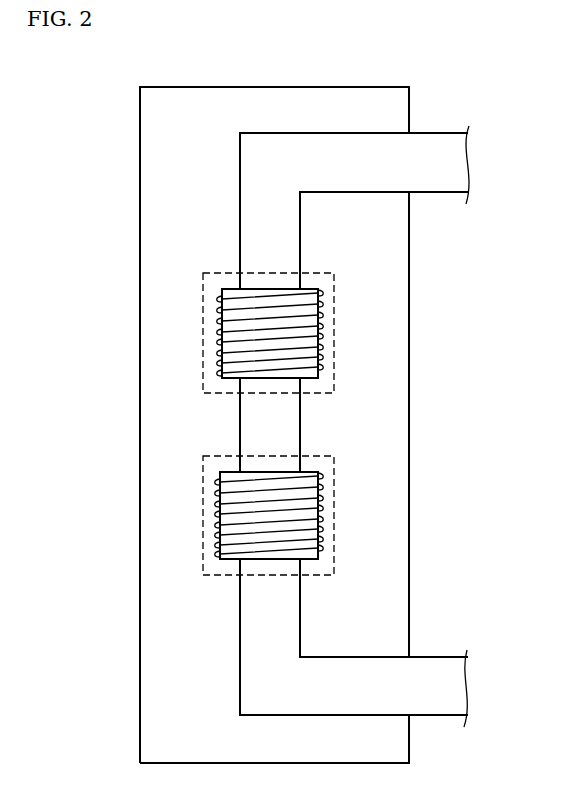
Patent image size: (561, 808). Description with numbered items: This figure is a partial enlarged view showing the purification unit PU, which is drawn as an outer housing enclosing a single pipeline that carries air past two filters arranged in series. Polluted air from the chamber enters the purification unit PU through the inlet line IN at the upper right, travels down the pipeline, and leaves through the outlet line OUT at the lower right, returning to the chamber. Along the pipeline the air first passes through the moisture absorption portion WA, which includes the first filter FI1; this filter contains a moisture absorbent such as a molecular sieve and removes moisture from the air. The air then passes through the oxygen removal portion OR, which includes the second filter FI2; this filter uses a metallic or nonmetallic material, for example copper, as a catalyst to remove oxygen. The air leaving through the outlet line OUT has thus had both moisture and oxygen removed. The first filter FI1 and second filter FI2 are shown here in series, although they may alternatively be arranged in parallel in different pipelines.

The purification unit PU is at (140, 410).
The inlet line IN is at (441, 193).
The outlet line OUT is at (440, 716).
The moisture absorption portion WA is at (204, 294).
The first filter FI1 is at (222, 333).
The oxygen removal portion OR is at (204, 478).
The second filter FI2 is at (220, 515).